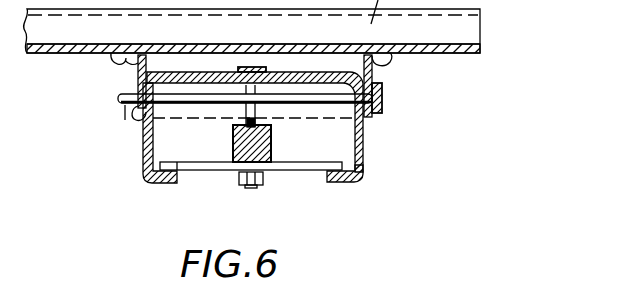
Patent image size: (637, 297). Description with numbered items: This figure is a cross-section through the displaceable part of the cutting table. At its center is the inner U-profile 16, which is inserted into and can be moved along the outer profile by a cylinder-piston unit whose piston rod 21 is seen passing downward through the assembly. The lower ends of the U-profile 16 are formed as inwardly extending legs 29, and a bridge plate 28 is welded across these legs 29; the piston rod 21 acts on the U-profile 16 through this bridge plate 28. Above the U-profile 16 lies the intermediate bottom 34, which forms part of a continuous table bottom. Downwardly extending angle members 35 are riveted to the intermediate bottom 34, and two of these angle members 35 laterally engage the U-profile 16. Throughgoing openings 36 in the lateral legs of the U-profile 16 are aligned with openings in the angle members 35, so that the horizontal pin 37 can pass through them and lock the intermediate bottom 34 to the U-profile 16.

The pin 37 is at (468, 43).
The intermediate bottom 34 is at (383, 91).
The angle member 35 is at (130, 78).
The throughgoing opening 36 is at (138, 125).
The U-profile 16 is at (365, 143).
The piston rod 21 is at (272, 165).
The bridge plate 28 is at (203, 172).
The inwardly extending leg 29 is at (140, 186).